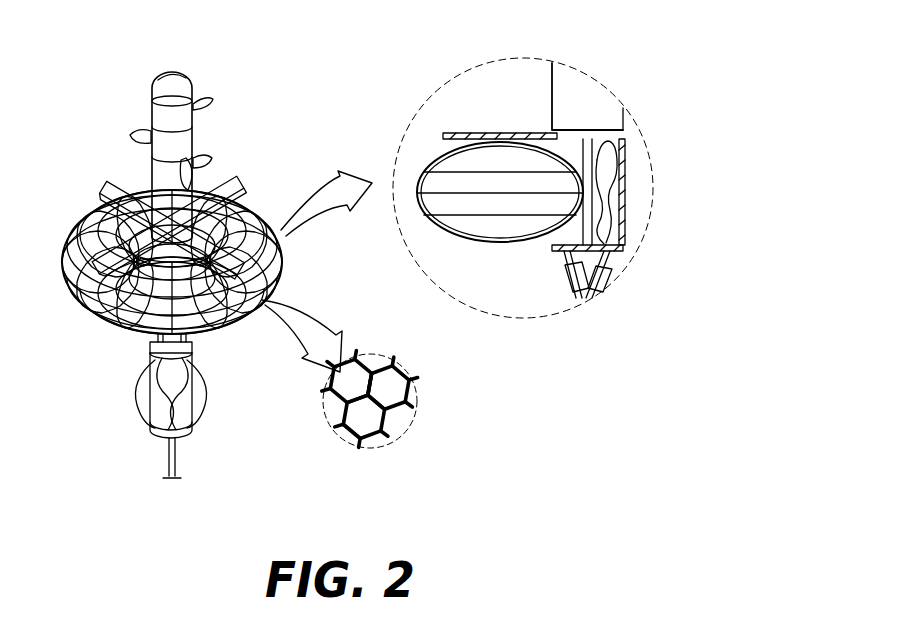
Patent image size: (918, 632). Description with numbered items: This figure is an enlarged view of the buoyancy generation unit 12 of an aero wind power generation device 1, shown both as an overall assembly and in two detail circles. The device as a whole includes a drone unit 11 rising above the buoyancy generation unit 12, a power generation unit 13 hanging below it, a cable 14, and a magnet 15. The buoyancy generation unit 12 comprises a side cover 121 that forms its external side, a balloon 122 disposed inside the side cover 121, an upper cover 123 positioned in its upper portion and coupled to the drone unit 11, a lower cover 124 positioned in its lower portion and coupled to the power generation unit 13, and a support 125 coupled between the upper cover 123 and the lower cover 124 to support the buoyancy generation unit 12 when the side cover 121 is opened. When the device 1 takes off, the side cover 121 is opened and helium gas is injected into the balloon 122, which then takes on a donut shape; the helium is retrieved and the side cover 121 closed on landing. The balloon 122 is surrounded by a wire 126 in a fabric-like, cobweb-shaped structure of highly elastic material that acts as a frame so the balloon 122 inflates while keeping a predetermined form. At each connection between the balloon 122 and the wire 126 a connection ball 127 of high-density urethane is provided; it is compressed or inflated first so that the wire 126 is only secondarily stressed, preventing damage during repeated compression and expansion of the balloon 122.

The aero wind power generation device 1 is at (46, 49).
The drone unit 11 is at (207, 131).
The buoyancy generation unit 12 is at (452, 119).
The side cover 121 is at (240, 192).
The balloon 122 is at (76, 218).
The upper cover 123 is at (620, 143).
The lower cover 124 is at (622, 248).
The support 125 is at (600, 229).
The wire 126 is at (371, 447).
The connection ball 127 is at (393, 376).
The power generation unit 13 is at (220, 372).
The cable 14 is at (177, 458).
The magnet 15 is at (153, 436).